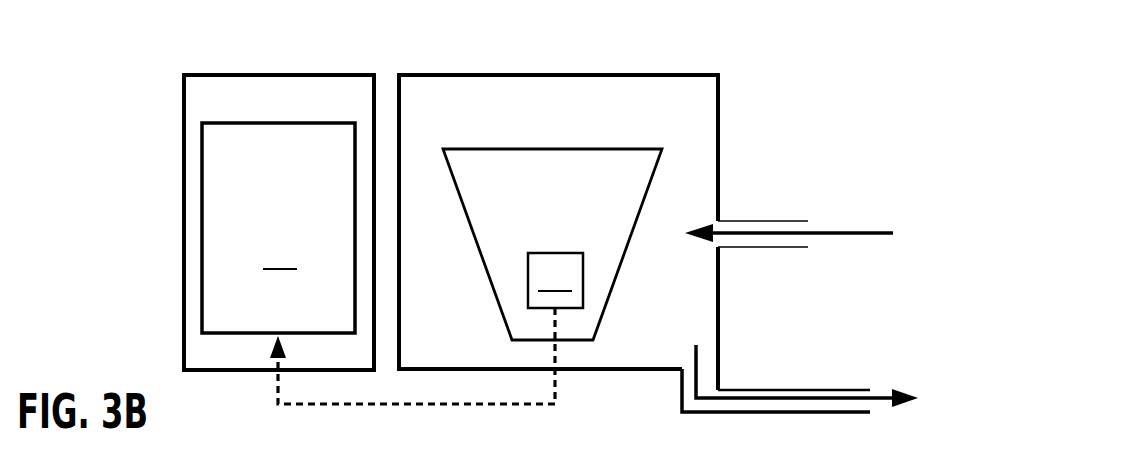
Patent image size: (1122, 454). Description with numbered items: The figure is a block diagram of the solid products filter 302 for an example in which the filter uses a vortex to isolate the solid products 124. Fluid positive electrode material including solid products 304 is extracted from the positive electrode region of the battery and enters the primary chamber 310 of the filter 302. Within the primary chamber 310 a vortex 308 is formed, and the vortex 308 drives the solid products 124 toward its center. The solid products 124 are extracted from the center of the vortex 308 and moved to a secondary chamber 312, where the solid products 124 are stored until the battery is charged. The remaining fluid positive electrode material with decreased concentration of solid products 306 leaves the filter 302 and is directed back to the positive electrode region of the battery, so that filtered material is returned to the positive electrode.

The solid product filter 302 is at (768, 82).
The fluid positive electrode material including solid products 304 is at (850, 233).
The fluid positive electrode material with decreased concentration of solid products 306 is at (875, 393).
The vortex 308 is at (587, 149).
The primary chamber 310 is at (583, 75).
The secondary chamber 312 is at (285, 75).
The solid products 124 is at (423, 325).